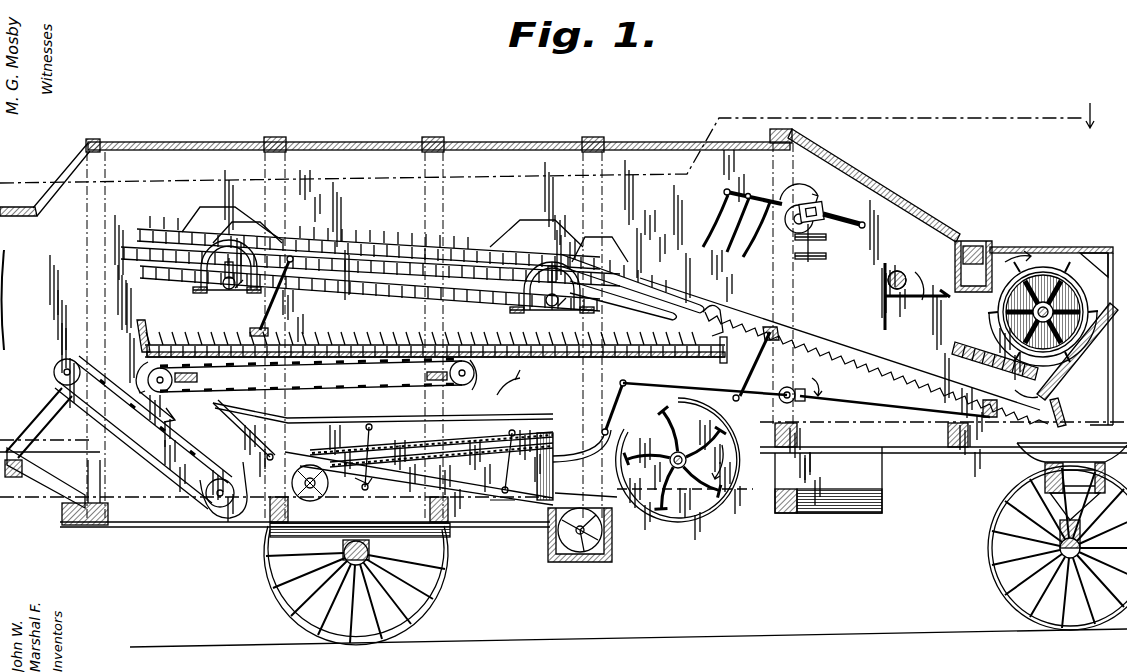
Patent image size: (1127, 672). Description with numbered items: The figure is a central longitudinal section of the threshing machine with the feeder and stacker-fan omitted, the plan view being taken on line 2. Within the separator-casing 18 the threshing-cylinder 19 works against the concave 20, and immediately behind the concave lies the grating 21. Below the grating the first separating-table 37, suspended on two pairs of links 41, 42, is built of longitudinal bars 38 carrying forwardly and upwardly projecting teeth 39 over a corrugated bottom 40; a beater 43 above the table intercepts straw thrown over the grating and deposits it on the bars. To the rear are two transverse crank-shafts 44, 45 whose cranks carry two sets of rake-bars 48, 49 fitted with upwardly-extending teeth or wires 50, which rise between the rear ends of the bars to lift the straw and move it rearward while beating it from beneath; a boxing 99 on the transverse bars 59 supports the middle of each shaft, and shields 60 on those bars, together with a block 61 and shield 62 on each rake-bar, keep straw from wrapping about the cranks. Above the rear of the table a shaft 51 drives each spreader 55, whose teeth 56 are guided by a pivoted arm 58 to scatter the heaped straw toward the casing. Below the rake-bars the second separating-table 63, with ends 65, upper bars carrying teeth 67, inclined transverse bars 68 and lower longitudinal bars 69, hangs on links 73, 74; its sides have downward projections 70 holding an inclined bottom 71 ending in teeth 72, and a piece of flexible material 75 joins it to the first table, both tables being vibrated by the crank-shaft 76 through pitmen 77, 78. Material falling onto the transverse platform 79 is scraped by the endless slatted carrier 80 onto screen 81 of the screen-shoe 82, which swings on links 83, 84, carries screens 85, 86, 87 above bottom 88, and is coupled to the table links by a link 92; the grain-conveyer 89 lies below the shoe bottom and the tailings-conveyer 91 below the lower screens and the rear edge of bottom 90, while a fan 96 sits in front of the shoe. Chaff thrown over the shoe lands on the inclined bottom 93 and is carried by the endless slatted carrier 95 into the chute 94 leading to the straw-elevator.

The section line 2 is at (1096, 115).
The separator-casing 18 is at (487, 153).
The threshing-cylinder 19 is at (1048, 275).
The concave 20 is at (1085, 365).
The grating 21 is at (995, 355).
The first separating-table 37 is at (840, 329).
The longitudinal bars 38 is at (884, 360).
The teeth 39 is at (863, 367).
The corrugated bottom 40 is at (840, 344).
The links 41 is at (757, 364).
The links 42 is at (1034, 405).
The beater 43 is at (917, 296).
The crank-shaft 44 is at (548, 294).
The crank-shaft 45 is at (227, 283).
The rake-bars 48 is at (395, 282).
The rake-bars 49 is at (370, 240).
The teeth or wires 50 is at (440, 244).
The shaft 51 is at (822, 210).
The spreader 55 is at (753, 188).
The teeth 56 is at (736, 226).
The arm 58 is at (828, 225).
The transverse bars 59 is at (208, 291).
The shields 60 is at (200, 278).
The block 61 is at (205, 212).
The shield 62 is at (265, 226).
The second separating-table 63 is at (319, 317).
The ends 65 is at (140, 334).
The teeth 67 is at (392, 340).
The transverse bars 68 is at (440, 345).
The longitudinal bars 69 is at (488, 375).
The downward projections 70 is at (569, 387).
The bottom 71 is at (538, 372).
The teeth 72 is at (511, 391).
The links 73 is at (610, 406).
The links 74 is at (280, 292).
The piece of flexible material 75 is at (722, 318).
The crank-shaft 76 is at (809, 383).
The pitman 77 is at (840, 398).
The pitman 78 is at (700, 388).
The transverse platform 79 is at (322, 372).
The endless slatted carrier 80 is at (145, 364).
The screen 81 is at (380, 448).
The screen-shoe 82 is at (463, 468).
The links 83 is at (354, 479).
The links 84 is at (503, 501).
The screen 85 is at (283, 420).
The screen 86 is at (441, 444).
The screen 87 is at (438, 458).
The bottom 88 is at (419, 481).
The grain-conveyer 89 is at (603, 530).
The bottom 90 is at (244, 430).
The tailings-conveyer 91 is at (326, 497).
The link 92 is at (580, 460).
The inclined bottom 93 is at (68, 434).
The chute 94 is at (46, 452).
The endless slatted carrier 95 is at (144, 432).
The fan 96 is at (678, 460).
The boxing 99 is at (410, 304).